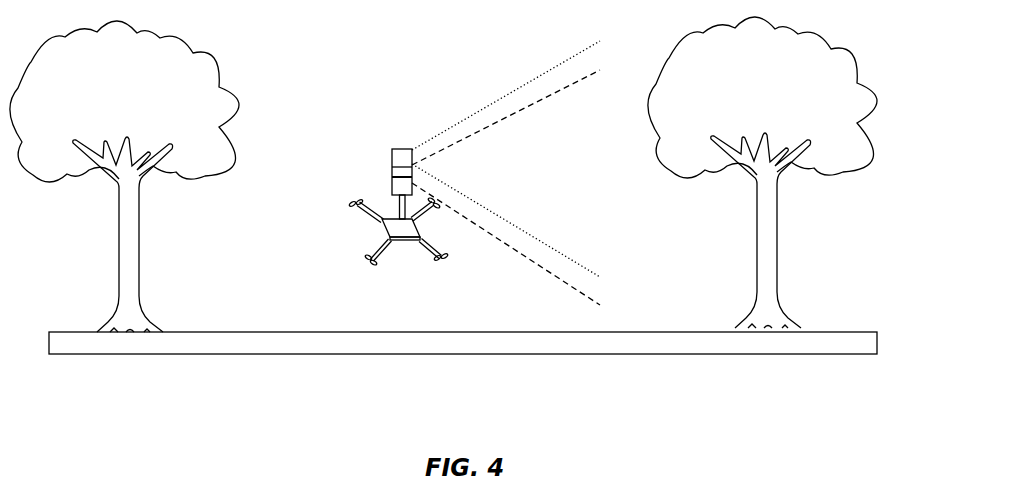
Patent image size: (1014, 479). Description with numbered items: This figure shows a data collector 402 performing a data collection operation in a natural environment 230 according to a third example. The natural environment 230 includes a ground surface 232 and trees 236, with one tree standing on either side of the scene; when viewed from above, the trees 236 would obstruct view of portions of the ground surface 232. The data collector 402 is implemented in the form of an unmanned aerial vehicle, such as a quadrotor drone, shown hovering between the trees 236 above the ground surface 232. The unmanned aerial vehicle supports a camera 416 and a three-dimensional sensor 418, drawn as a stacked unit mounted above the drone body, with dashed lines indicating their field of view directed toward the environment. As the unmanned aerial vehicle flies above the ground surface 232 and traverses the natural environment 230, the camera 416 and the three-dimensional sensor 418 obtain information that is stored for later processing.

The natural environment 230 is at (469, 230).
The ground surface 232 is at (822, 332).
The trees 236 is at (858, 73).
The data collector 402 is at (427, 173).
The camera 416 is at (392, 162).
The three-dimensional sensor 418 is at (392, 183).